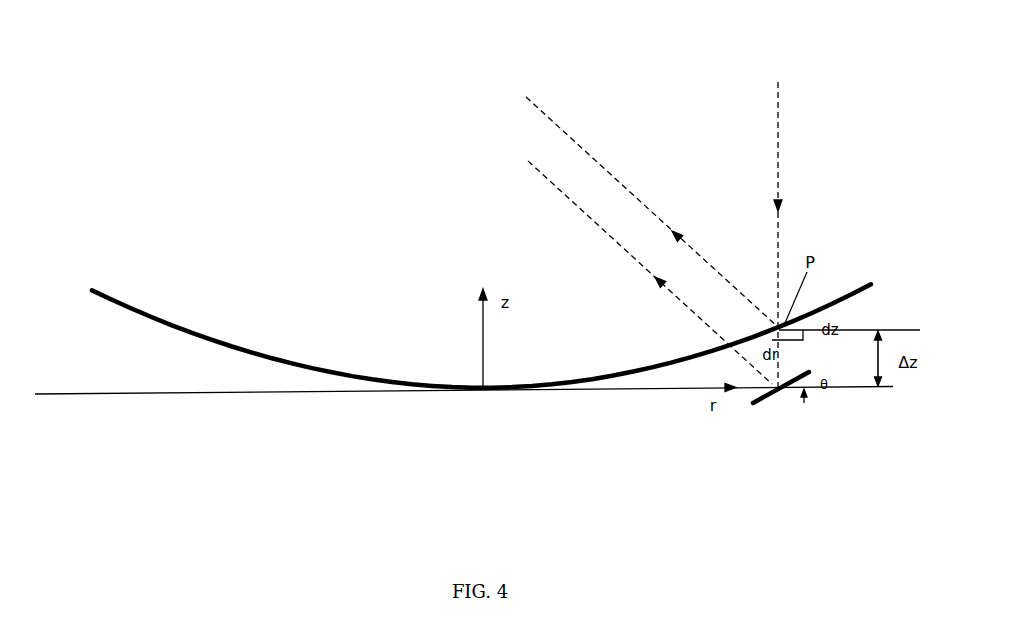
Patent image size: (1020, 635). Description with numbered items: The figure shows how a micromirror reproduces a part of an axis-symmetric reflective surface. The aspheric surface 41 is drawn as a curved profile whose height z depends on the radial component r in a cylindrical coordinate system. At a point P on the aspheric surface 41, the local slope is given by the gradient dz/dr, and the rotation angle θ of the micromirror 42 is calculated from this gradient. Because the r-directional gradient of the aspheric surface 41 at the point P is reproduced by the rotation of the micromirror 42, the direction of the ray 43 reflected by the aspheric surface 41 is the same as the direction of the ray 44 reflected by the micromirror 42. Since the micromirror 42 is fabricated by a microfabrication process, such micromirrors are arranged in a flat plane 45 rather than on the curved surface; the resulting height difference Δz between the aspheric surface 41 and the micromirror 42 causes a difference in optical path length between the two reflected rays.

The aspheric surface 41 is at (182, 314).
The micromirror 42 is at (771, 400).
The ray reflected by the aspheric surface 43 is at (564, 125).
The ray reflected by the micromirror 44 is at (528, 171).
The flat plane 45 is at (203, 403).